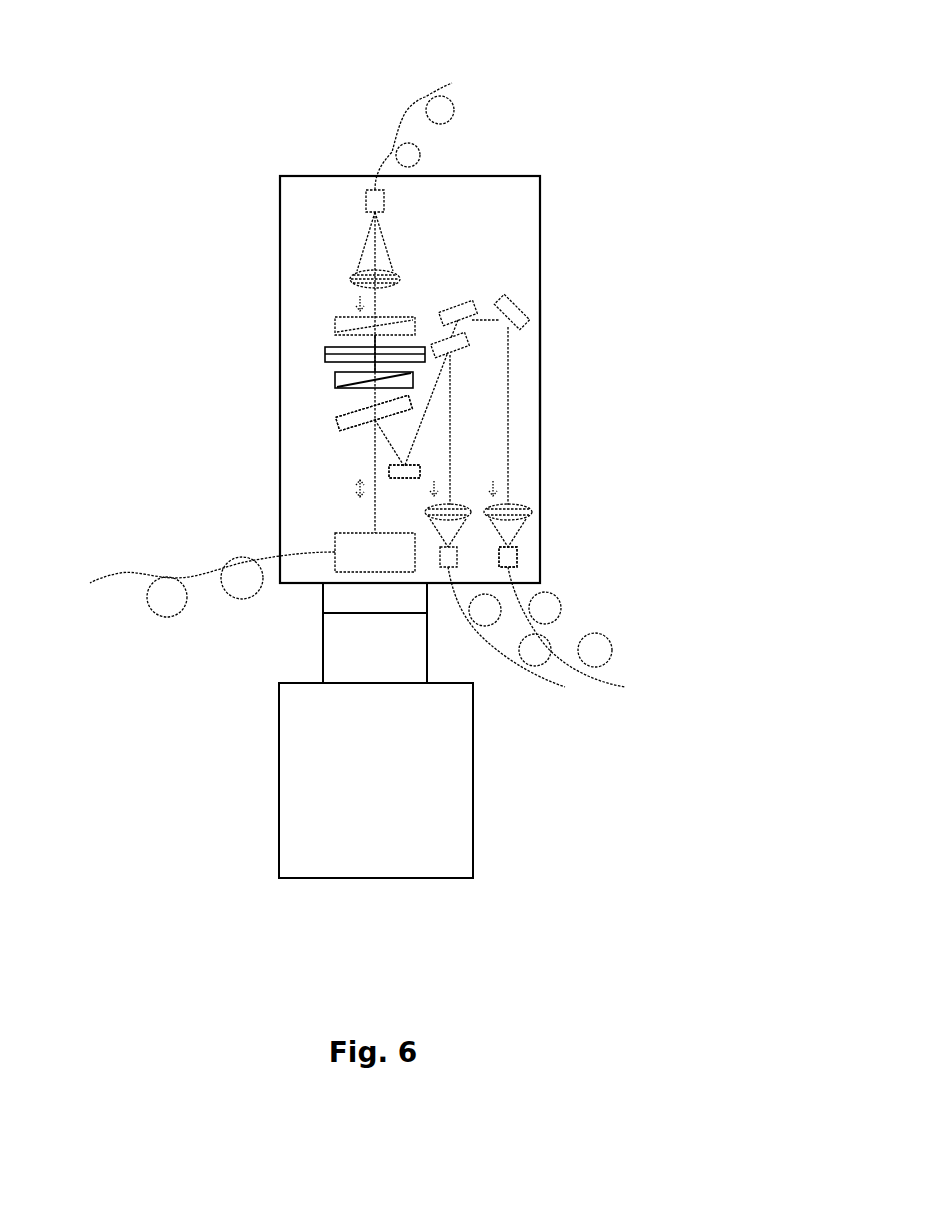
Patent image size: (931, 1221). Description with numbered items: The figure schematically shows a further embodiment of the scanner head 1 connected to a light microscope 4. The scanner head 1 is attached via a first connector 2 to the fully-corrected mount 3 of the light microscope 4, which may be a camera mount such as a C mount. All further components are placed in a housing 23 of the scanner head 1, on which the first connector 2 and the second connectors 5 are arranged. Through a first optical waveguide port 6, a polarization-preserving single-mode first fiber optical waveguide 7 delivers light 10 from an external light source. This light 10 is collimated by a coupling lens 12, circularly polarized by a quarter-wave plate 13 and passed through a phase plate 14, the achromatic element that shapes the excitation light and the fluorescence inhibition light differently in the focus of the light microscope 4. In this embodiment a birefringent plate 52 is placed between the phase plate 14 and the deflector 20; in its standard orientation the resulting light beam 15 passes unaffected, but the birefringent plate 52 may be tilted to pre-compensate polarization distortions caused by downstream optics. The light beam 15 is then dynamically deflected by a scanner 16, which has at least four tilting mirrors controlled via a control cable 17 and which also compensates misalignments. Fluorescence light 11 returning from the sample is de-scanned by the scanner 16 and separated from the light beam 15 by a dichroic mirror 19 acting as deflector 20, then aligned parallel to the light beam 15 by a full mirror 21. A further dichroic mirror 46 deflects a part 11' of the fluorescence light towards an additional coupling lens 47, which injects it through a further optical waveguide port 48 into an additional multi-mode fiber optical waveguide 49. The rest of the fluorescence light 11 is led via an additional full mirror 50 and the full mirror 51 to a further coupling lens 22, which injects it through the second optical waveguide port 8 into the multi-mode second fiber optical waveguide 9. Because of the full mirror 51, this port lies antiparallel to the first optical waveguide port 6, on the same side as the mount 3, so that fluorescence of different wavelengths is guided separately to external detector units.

The scanner head 1 is at (590, 210).
The first connector 2 is at (308, 612).
The mount 3 is at (306, 657).
The light microscope 4 is at (262, 752).
The second connector 5 is at (352, 182).
The first optical waveguide port 6 is at (372, 193).
The first fiber optical waveguide 7 is at (405, 110).
The second optical waveguide port 8 is at (513, 556).
The second fiber optical waveguide 9 is at (605, 680).
The light 10 is at (365, 250).
The fluorescence light 11 is at (587, 416).
The part of the fluorescence light 11' is at (560, 430).
The coupling lens 12 is at (352, 277).
The quarter-wave plate 13 is at (336, 323).
The phase plate 14 is at (325, 350).
The light beam 15 is at (373, 453).
The scanner 16 is at (335, 541).
The control cable 17 is at (130, 572).
The dichroic mirror 19 is at (340, 421).
The deflector 20 is at (374, 413).
The full mirror 21 is at (421, 470).
The further coupling lens 22 is at (533, 512).
The housing 23 is at (542, 380).
The further dichroic mirror 46 is at (468, 340).
The additional coupling lens 47 is at (471, 508).
The further optical waveguide port 48 is at (447, 567).
The multi-mode fiber optical waveguide 49 is at (532, 677).
The additional full mirror 50 is at (473, 303).
The full mirror 51 is at (527, 310).
The birefringent plate 52 is at (335, 378).